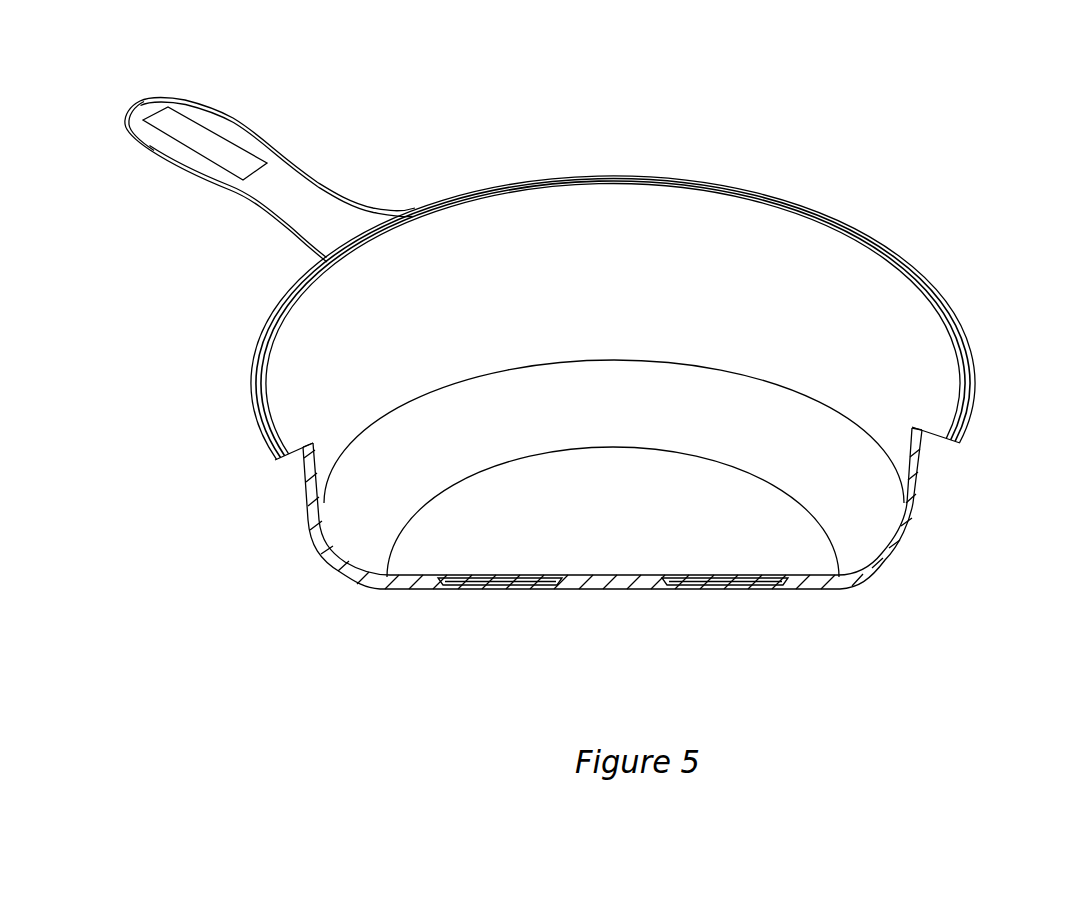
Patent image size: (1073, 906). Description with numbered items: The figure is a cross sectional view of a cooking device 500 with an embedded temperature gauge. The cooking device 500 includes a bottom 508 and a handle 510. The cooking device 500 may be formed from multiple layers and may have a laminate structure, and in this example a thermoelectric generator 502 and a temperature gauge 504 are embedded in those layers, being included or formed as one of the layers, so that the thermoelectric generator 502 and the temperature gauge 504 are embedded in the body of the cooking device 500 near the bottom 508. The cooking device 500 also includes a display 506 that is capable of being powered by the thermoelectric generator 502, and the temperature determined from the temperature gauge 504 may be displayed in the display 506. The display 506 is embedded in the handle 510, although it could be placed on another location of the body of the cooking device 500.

The cooking device 500 is at (943, 182).
The thermoelectric generator 502 is at (777, 590).
The temperature gauge 504 is at (480, 590).
The display 506 is at (262, 166).
The bottom 508 is at (905, 552).
The handle 510 is at (226, 104).